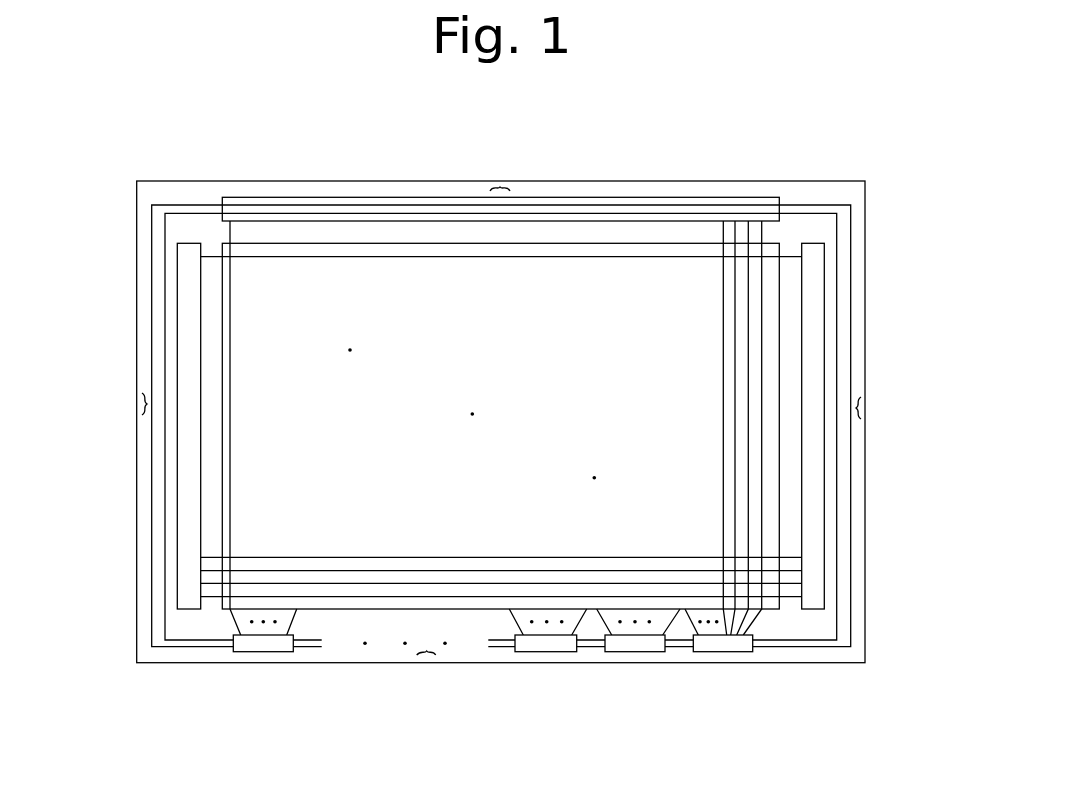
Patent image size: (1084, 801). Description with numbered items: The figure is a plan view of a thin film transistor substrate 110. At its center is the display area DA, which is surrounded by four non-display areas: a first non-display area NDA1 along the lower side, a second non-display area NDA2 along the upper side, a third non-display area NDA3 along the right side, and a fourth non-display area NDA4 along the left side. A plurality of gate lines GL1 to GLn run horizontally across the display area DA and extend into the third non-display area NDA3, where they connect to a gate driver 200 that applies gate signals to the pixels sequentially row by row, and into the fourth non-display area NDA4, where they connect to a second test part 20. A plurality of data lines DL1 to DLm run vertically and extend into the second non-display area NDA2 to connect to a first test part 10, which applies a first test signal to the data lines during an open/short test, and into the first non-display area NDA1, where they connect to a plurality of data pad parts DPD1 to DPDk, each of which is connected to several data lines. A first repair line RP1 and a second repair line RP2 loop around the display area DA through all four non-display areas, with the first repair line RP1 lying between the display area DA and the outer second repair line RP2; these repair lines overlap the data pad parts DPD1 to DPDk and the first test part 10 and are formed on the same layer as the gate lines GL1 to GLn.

The first test part 10 is at (580, 197).
The second test part 20 is at (177, 302).
The thin film transistor substrate 110 is at (865, 335).
The gate driver 200 is at (825, 467).
The display area DA is at (222, 465).
The first non-display area NDA1 is at (427, 655).
The second non-display area NDA2 is at (500, 187).
The third non-display area NDA3 is at (862, 402).
The fourth non-display area NDA4 is at (143, 404).
The gate line GL1 is at (787, 603).
The gate line GLn is at (789, 253).
The data line DL1 is at (752, 623).
The data line DLm is at (229, 623).
The data pad part DPD1 is at (715, 648).
The data pad part DPDk is at (272, 647).
The first repair line RP1 is at (807, 640).
The second repair line RP2 is at (833, 650).